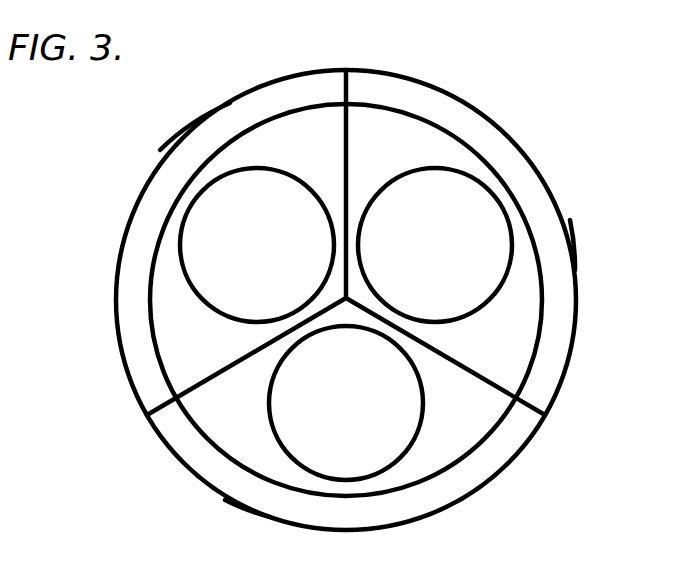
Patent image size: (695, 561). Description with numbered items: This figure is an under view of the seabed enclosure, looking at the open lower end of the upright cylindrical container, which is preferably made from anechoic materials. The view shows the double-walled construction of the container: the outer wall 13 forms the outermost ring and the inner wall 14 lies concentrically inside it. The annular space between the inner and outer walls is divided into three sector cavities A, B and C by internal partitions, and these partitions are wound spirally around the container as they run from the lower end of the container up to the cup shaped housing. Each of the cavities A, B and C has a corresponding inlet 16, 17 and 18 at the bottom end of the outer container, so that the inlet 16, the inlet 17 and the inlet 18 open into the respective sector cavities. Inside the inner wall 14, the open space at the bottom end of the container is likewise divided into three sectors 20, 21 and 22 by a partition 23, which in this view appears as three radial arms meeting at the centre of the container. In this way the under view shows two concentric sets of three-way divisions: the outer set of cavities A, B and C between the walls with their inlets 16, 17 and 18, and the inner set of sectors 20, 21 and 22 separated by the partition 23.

The outer wall 13 is at (120, 353).
The inner wall 14 is at (170, 354).
The inlet 16 is at (182, 145).
The inlet 17 is at (563, 243).
The inlet 18 is at (243, 492).
The sector 20 is at (273, 132).
The sector 21 is at (410, 135).
The sector 22 is at (470, 427).
The partition 23 is at (352, 124).
The sector A is at (443, 490).
The sector B is at (145, 228).
The sector C is at (540, 192).